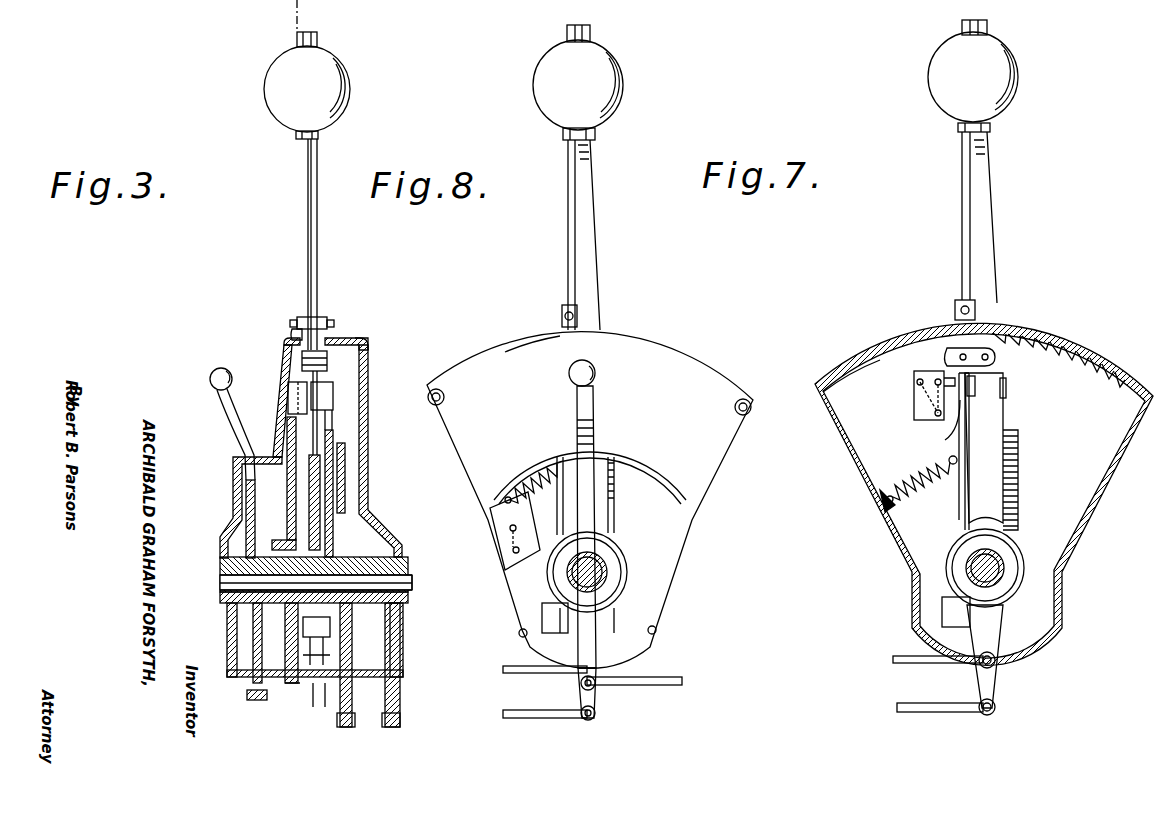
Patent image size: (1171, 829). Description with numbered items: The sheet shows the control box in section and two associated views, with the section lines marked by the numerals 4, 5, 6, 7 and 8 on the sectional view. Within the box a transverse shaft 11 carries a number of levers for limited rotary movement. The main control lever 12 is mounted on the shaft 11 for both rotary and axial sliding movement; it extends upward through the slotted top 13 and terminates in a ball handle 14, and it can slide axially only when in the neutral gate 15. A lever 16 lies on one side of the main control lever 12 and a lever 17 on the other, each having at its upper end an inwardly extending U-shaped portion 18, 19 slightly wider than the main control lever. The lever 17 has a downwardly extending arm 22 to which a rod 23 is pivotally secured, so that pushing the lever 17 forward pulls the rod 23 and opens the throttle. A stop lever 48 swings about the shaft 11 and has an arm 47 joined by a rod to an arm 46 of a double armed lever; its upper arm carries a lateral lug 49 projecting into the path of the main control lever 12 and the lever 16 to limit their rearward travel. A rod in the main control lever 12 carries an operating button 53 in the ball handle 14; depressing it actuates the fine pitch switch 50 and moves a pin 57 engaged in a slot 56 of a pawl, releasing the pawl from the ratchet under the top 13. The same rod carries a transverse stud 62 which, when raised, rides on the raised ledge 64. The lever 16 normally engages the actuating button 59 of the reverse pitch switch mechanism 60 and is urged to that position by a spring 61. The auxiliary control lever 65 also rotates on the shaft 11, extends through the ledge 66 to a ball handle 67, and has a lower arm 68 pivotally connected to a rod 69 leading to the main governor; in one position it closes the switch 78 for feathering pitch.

In FIG. 3, the section line 4- 4 is at (335, 320).
In FIG. 3, the section line 5- 5 is at (323, 320).
In FIG. 3, the section line 6- 6 is at (306, 700).
In FIG. 3, the section line 7- 7 is at (285, 320).
In FIG. 3, the section line 8- 8 is at (207, 330).
In FIG. 3, the transverse shaft 11 is at (222, 582).
In FIG. 3, the main control lever 12 is at (318, 257).
In FIG. 8, the main control lever 12 is at (598, 255).
In FIG. 7, the main control lever 12 is at (982, 228).
In FIG. 3, the slotted top 13 is at (340, 338).
In FIG. 8, the slotted top 13 is at (655, 316).
In FIG. 3, the ball handle 14 is at (340, 88).
In FIG. 8, the ball handle 14 is at (600, 95).
In FIG. 7, the ball handle 14 is at (1005, 80).
In FIG. 3, the gate 15 is at (292, 335).
In FIG. 3, the lever 16 is at (333, 430).
In FIG. 3, the lever 17 is at (288, 425).
In FIG. 8, the lever 17 is at (600, 510).
In FIG. 7, the lever 17 is at (975, 445).
In FIG. 3, the U-shaped portion 18 is at (322, 372).
In FIG. 3, the U-shaped portion 19 is at (289, 385).
In FIG. 7, the downwardly extending arm 22 is at (990, 625).
In FIG. 8, the rod 23 is at (525, 667).
In FIG. 7, the rod 23 is at (935, 664).
In FIG. 8, the arm of the double armed lever 46 is at (607, 527).
In FIG. 3, the arm 47 is at (400, 690).
In FIG. 7, the stop lever 48 is at (1010, 482).
In FIG. 3, the lateral lug 49 is at (333, 396).
In FIG. 3, the fine pitch switch 50 is at (317, 641).
In FIG. 8, the fine pitch switch 50 is at (542, 620).
In FIG. 7, the fine pitch switch 50 is at (942, 610).
In FIG. 3, the operating button 53 is at (317, 38).
In FIG. 8, the operating button 53 is at (590, 32).
In FIG. 7, the operating button 53 is at (987, 27).
In FIG. 3, the slot 56 is at (368, 500).
In FIG. 7, the slot 56 is at (1100, 360).
In FIG. 3, the pin 57 is at (365, 341).
In FIG. 7, the pin 57 is at (1050, 345).
In FIG. 7, the actuating button 59 is at (945, 430).
In FIG. 7, the switch mechanism 60 is at (913, 393).
In FIG. 8, the spring 61 is at (508, 487).
In FIG. 7, the spring 61 is at (905, 470).
In FIG. 3, the transverse stud 62 is at (300, 317).
In FIG. 7, the transverse stud 62 is at (975, 308).
In FIG. 8, the raised ledge 64 is at (530, 320).
In FIG. 7, the raised ledge 64 is at (858, 346).
In FIG. 3, the auxiliary control lever 65 is at (232, 400).
In FIG. 8, the auxiliary control lever 65 is at (590, 412).
In FIG. 3, the ledge 66 is at (236, 459).
In FIG. 3, the ball handle 67 is at (211, 375).
In FIG. 3, the lower arm 68 is at (240, 637).
In FIG. 8, the lower arm 68 is at (620, 620).
In FIG. 8, the rod 69 is at (665, 685).
In FIG. 8, the switch 78 is at (500, 530).